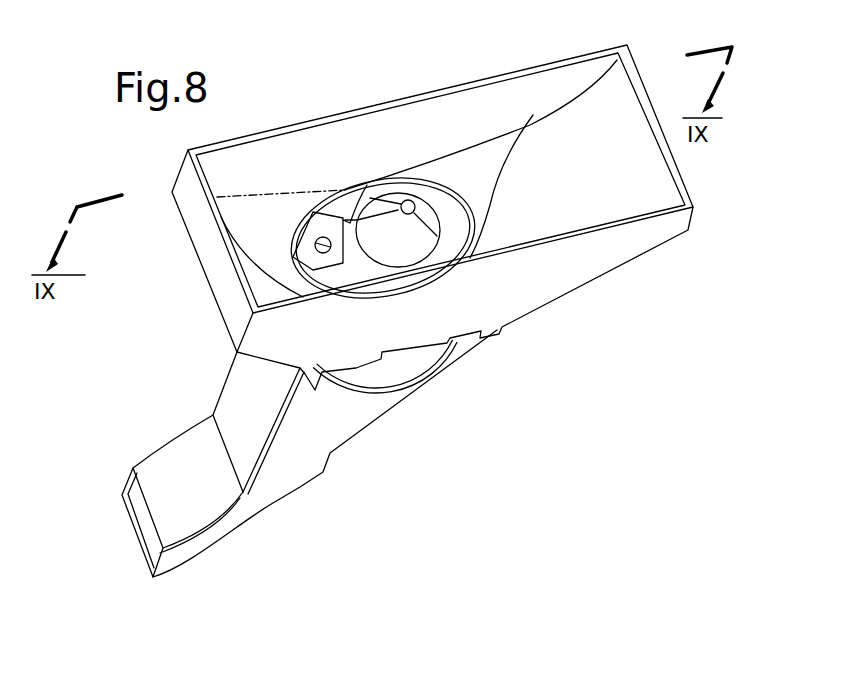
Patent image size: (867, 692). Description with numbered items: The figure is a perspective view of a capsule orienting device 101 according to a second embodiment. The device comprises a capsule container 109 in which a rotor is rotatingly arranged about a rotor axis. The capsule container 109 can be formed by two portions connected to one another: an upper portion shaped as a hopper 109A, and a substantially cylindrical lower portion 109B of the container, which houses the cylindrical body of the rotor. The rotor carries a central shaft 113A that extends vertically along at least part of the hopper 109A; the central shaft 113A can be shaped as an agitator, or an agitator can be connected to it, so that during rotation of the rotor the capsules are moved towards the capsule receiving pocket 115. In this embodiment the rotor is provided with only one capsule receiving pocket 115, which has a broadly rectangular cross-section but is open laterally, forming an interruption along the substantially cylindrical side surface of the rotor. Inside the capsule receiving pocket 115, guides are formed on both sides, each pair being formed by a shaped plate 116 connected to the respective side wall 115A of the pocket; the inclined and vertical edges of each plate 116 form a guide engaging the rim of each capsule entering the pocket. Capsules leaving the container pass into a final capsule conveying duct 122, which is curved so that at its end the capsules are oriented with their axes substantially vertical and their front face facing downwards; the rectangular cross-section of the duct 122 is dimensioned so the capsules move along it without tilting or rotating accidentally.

The capsule orienting device 101 is at (405, 159).
The capsule container 109 is at (525, 101).
The hopper 109A is at (600, 268).
The lower portion of the container 109B is at (410, 373).
The central shaft 113A is at (445, 218).
The capsule receiving pocket 115 is at (318, 231).
The side wall of the capsule receiving pocket 115A is at (357, 221).
The shaped plate 116 is at (310, 251).
The final capsule conveying duct 122 is at (143, 524).